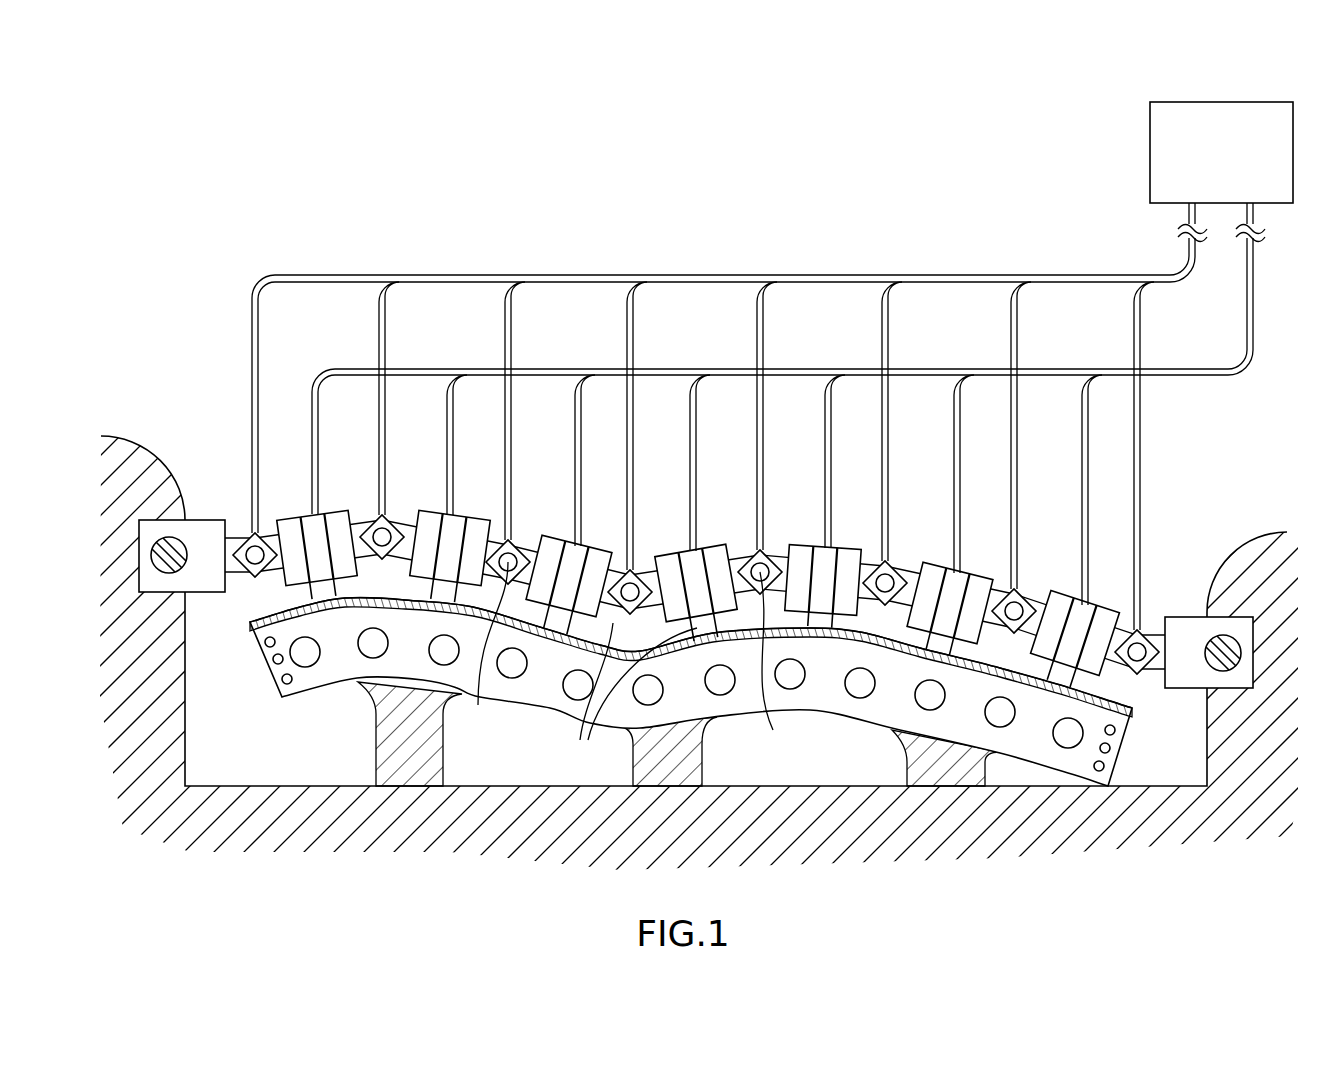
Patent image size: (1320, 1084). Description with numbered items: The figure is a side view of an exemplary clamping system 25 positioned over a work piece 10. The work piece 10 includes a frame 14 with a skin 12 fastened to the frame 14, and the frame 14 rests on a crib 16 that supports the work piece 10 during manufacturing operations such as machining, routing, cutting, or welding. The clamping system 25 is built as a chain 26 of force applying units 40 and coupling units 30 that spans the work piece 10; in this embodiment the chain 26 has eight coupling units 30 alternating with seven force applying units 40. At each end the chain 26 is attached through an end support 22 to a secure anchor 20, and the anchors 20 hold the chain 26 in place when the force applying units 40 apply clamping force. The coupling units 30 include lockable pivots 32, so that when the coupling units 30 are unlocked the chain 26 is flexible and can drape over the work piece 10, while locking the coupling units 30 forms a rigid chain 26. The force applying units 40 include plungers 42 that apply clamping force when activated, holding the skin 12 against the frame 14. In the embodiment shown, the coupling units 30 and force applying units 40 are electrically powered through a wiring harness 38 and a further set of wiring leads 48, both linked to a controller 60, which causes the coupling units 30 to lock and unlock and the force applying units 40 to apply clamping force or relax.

The work piece 10 is at (258, 683).
The skin 12 is at (250, 625).
The frame 14 is at (318, 687).
The crib 16 is at (444, 748).
The anchor 20 is at (150, 443).
The end support 22 is at (207, 519).
The clamping system 25 is at (410, 173).
The chain 26 is at (203, 353).
The coupling unit 30 is at (242, 528).
The lockable pivot 32 is at (643, 656).
The wiring harness 38 is at (595, 275).
The force applying unit 40 is at (290, 502).
The plunger 42 is at (630, 696).
The actuator bus 48 is at (736, 368).
The controller 60 is at (1150, 150).